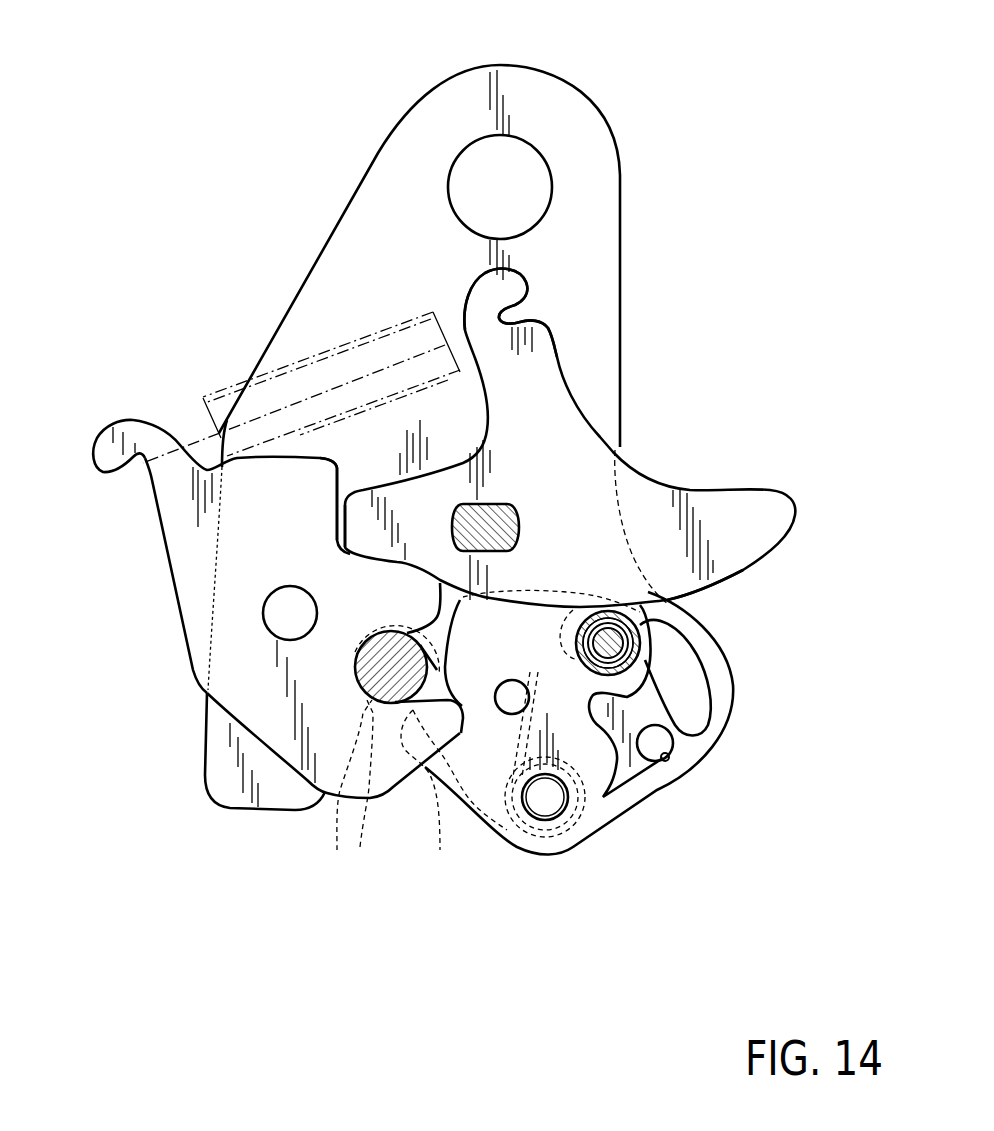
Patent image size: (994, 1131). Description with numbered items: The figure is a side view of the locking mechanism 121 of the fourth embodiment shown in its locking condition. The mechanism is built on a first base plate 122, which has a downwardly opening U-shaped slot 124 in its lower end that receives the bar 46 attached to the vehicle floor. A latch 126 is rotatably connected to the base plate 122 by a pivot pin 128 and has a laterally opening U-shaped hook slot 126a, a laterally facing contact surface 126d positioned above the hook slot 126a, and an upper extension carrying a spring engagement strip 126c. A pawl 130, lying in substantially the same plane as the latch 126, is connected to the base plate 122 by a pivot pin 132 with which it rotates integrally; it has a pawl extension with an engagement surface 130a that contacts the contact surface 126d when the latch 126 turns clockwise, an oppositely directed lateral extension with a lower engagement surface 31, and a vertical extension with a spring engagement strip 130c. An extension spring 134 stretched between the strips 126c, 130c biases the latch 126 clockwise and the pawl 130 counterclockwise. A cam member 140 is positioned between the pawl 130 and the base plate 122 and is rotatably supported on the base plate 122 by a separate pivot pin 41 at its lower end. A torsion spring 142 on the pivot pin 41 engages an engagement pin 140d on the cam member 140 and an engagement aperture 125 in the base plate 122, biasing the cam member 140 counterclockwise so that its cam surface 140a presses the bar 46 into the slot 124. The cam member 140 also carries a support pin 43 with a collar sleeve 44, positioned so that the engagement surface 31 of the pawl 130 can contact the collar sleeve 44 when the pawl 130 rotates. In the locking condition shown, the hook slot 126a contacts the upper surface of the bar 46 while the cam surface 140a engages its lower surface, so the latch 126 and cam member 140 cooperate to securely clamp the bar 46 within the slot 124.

The locking mechanism 121 is at (179, 84).
The first base plate 122 is at (358, 238).
The extension spring 134 is at (337, 347).
The latch 126 is at (223, 582).
The spring engagement strip 126c is at (139, 456).
The contact surface 126d is at (345, 500).
The hook slot 126a is at (355, 668).
The pivot pin 128 is at (287, 615).
The bar 46 is at (383, 703).
The U-shaped slot 124 is at (472, 739).
The pawl 130 is at (557, 413).
The spring engagement strip 130c is at (515, 315).
The engagement surface 130a is at (340, 530).
The pivot pin 132 is at (493, 530).
The lower engagement surface 31 is at (662, 598).
The cam member 140 is at (593, 753).
The collar sleeve 44 is at (650, 630).
The support pin 43 is at (635, 686).
The engagement aperture 125 is at (657, 743).
The engagement pin 140d is at (512, 697).
The cam surface 140a is at (441, 820).
The pivot pin 41 is at (547, 798).
The torsion spring 142 is at (575, 845).